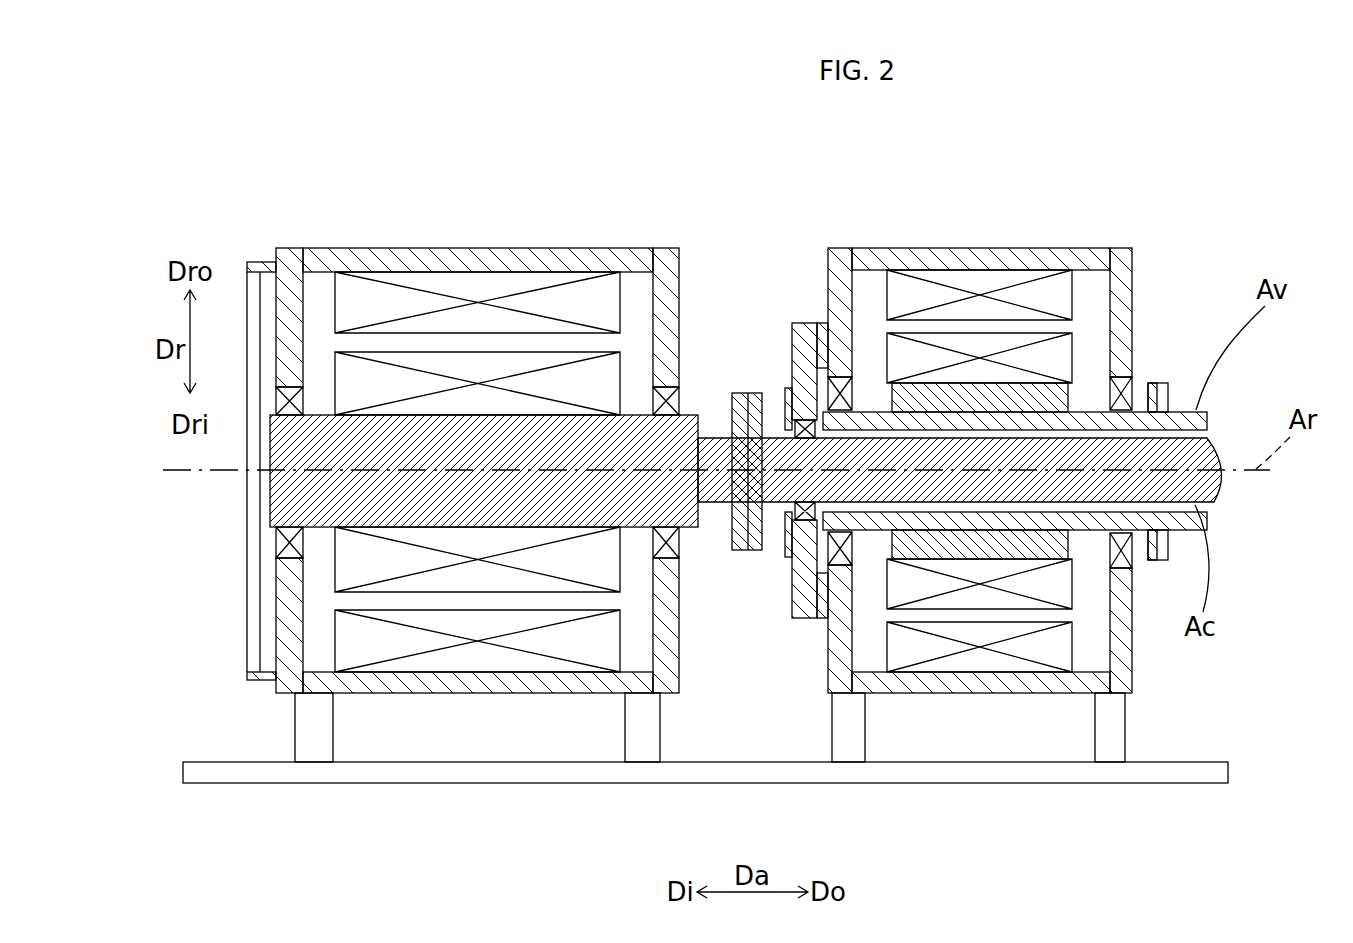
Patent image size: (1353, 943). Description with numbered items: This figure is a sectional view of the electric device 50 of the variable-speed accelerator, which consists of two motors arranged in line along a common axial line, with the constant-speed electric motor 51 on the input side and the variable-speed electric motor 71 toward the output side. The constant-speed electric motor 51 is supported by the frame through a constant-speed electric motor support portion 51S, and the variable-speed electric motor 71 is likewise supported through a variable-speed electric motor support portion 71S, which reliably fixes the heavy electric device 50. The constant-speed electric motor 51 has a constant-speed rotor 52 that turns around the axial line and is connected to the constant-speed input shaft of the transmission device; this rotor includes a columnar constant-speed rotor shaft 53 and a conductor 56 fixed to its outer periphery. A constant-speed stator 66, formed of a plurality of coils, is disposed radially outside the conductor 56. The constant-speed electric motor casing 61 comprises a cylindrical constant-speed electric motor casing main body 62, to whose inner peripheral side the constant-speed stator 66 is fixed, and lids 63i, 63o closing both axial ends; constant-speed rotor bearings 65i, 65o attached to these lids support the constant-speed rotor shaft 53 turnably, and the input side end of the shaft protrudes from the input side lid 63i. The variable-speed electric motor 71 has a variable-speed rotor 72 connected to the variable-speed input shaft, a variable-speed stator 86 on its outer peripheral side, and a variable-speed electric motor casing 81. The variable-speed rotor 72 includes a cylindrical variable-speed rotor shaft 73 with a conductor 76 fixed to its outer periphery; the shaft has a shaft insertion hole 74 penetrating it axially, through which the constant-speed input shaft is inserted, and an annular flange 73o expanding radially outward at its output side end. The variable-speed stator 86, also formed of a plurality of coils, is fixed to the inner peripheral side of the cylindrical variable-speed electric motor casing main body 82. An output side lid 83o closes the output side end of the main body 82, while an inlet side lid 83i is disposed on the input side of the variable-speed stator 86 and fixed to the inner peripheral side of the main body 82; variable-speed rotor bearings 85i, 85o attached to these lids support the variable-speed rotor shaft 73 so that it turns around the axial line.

The electric device 50 is at (711, 157).
The constant-speed electric motor 51 is at (336, 238).
The constant-speed electric motor support portion 51S is at (300, 746).
The constant-speed rotor 52 is at (515, 341).
The constant-speed rotor shaft 53 is at (520, 530).
The conductor 56 is at (480, 580).
The constant-speed electric motor casing 61 is at (455, 238).
The constant-speed electric motor casing main body 62 is at (398, 258).
The input side lid 63i is at (278, 305).
The output side lid 63o is at (683, 300).
The constant-speed rotor bearing 65i is at (287, 405).
The constant-speed rotor bearing 65o is at (680, 400).
The constant-speed stator 66 is at (578, 290).
The variable-speed electric motor 71 is at (877, 239).
The variable-speed electric motor support portion 71S is at (838, 742).
The variable-speed rotor 72 is at (1003, 317).
The variable-speed rotor shaft 73 is at (965, 547).
The flange 73o is at (1150, 383).
The shaft insertion hole 74 is at (920, 505).
The conductor 76 is at (1018, 598).
The variable-speed electric motor casing 81 is at (1087, 258).
The variable-speed electric motor casing main body 82 is at (950, 258).
The inlet side lid 83i is at (820, 330).
The output side lid 83o is at (1130, 330).
The variable-speed rotor bearing 85i is at (815, 395).
The variable-speed rotor bearing 85o is at (1130, 390).
The variable-speed stator 86 is at (1040, 290).